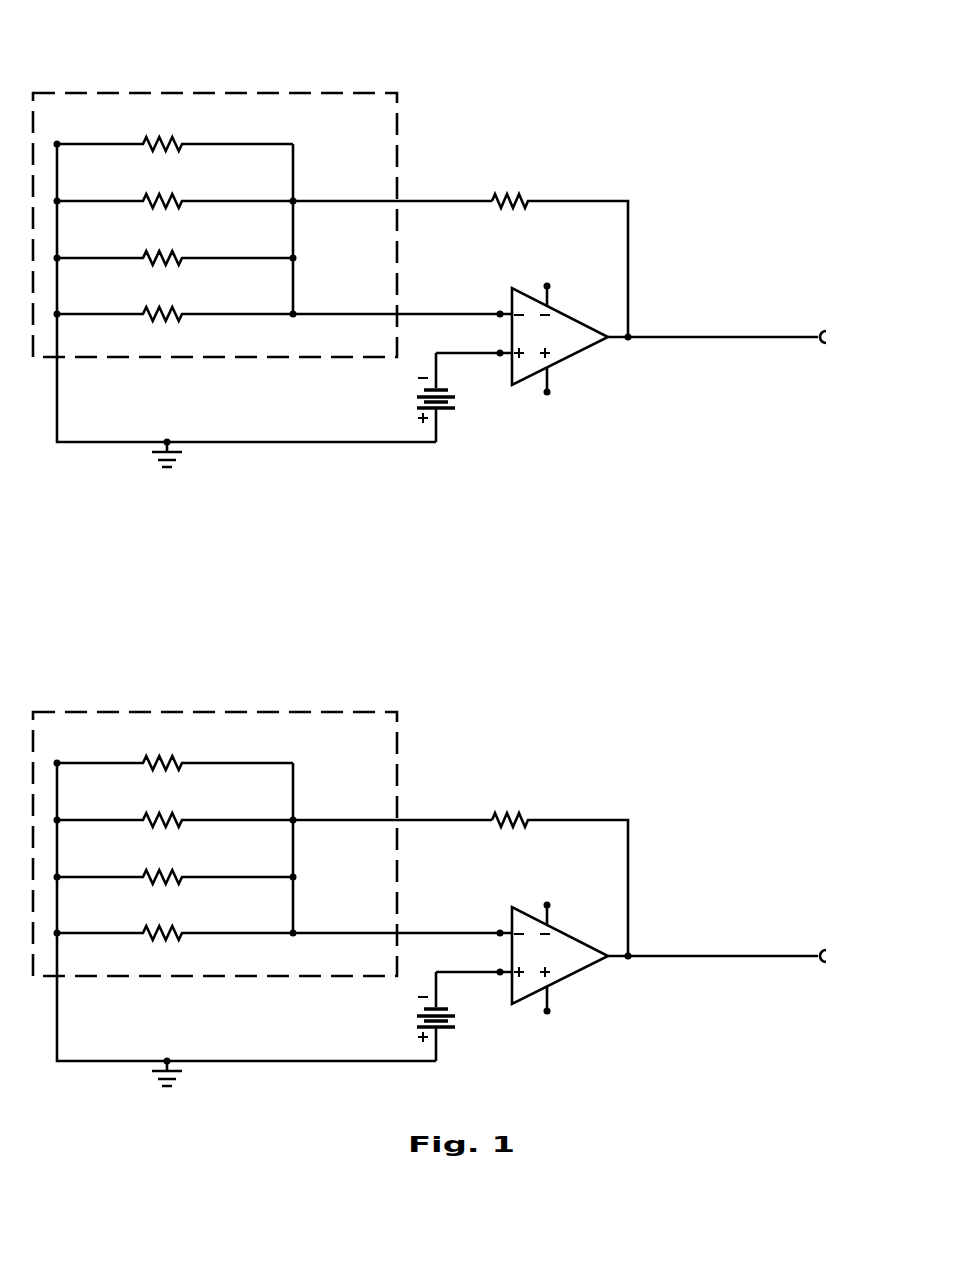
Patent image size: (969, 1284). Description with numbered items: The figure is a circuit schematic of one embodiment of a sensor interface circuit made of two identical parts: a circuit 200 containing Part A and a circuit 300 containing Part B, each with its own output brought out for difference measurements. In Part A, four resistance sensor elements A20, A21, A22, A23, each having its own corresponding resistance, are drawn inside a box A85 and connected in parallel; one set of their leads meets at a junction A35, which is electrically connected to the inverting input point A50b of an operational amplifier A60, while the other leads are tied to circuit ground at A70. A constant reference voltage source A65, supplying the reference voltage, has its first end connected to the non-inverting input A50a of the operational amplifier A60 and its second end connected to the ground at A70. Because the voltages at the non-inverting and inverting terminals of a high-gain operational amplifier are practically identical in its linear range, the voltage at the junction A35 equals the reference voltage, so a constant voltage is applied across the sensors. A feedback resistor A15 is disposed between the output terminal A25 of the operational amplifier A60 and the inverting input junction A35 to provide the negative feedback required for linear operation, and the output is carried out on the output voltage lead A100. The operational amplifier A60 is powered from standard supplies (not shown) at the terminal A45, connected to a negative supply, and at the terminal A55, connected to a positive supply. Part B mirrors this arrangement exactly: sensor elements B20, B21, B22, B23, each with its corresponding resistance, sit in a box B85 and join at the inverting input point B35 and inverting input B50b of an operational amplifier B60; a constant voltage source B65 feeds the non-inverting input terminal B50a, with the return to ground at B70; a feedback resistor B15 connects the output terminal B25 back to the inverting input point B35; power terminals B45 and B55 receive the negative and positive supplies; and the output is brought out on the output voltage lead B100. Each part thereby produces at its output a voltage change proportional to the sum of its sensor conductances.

The circuit containing Part A 200 is at (708, 62).
The box A85 is at (108, 92).
The resistance sensor element A20 is at (143, 141).
The resistance sensor element A21 is at (143, 198).
The resistance sensor element A22 is at (143, 255).
The resistance sensor element A23 is at (143, 311).
The junction A35 is at (296, 198).
The feedback resistor A15 is at (492, 199).
The inverting input point A50b is at (500, 312).
The non-inverting input A50a is at (500, 351).
The operational amplifier A60 is at (565, 358).
The power terminal A45 is at (546, 284).
The power terminal A55 is at (548, 394).
The output terminal A25 is at (632, 334).
The output voltage lead A100 is at (815, 345).
The constant reference voltage source A65 is at (450, 410).
The circuit ground A70 is at (167, 441).
The circuit containing Part B 300 is at (466, 849).
The box B85 is at (215, 816).
The resistance sensor element B20 is at (174, 750).
The resistance sensor element B21 is at (174, 807).
The resistance sensor element B22 is at (174, 864).
The resistance sensor element B23 is at (174, 920).
The inverting input point B35 is at (391, 850).
The feedback resistor B15 is at (523, 873).
The inverting input point B50b is at (402, 919).
The non-inverting input terminal B50a is at (462, 959).
The operational amplifier B60 is at (580, 959).
The power terminal B45 is at (512, 900).
The power terminal B55 is at (584, 1017).
The output terminal B25 is at (713, 941).
The output voltage lead B100 is at (801, 969).
The constant voltage source B65 is at (460, 1027).
The circuit ground B70 is at (246, 924).